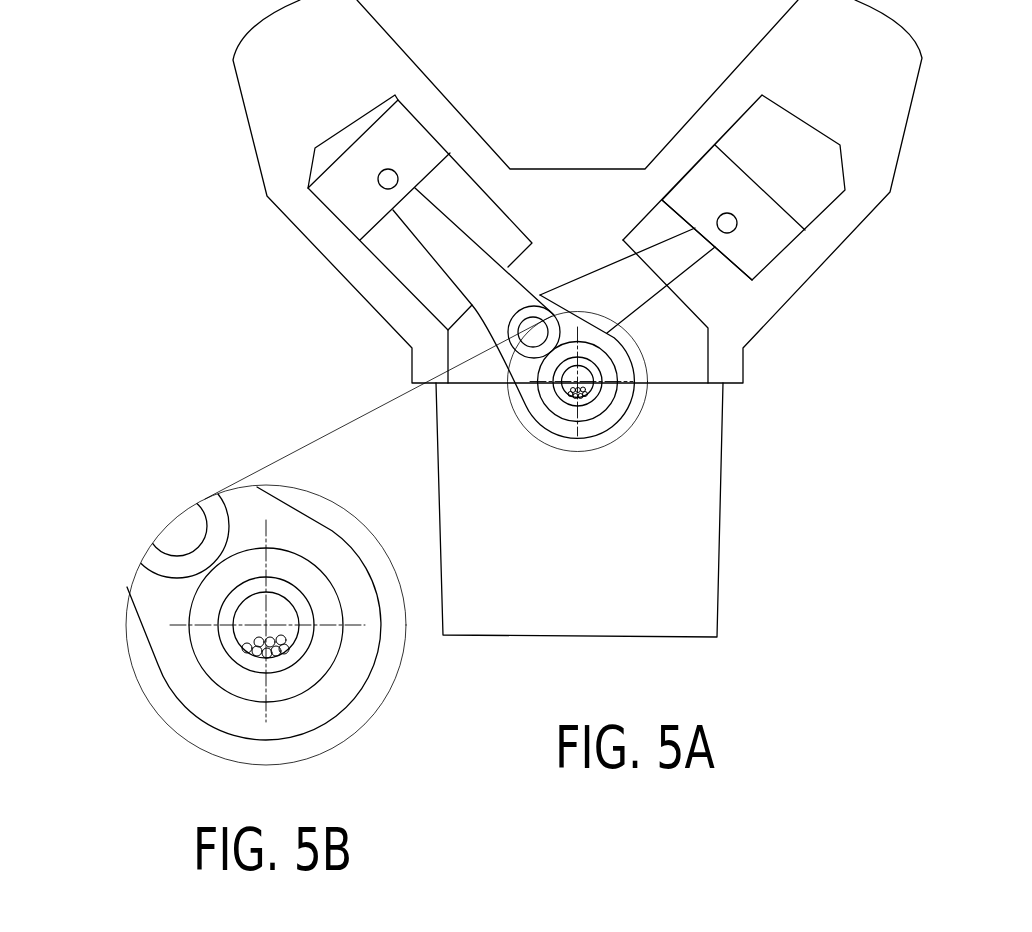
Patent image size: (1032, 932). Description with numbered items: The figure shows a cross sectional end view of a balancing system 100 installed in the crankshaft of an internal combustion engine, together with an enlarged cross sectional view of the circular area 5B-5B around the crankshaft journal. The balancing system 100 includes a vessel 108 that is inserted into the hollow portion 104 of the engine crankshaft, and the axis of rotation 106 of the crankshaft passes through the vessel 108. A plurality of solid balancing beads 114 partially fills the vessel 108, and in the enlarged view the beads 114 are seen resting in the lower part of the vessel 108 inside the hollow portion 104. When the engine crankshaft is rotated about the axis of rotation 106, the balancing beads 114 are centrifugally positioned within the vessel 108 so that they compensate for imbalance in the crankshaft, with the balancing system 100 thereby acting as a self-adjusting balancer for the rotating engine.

In FIG. 5B, the balancing system 100 is at (234, 662).
In FIG. 5B, the hollow portion 104 is at (223, 597).
In FIG. 5B, the axis of rotation 106 is at (330, 625).
In FIG. 5B, the vessel 108 is at (298, 650).
In FIG. 5B, the solid balancing beads 114 is at (243, 644).
In FIG. 5A, the circular area 5B-5B is at (640, 413).